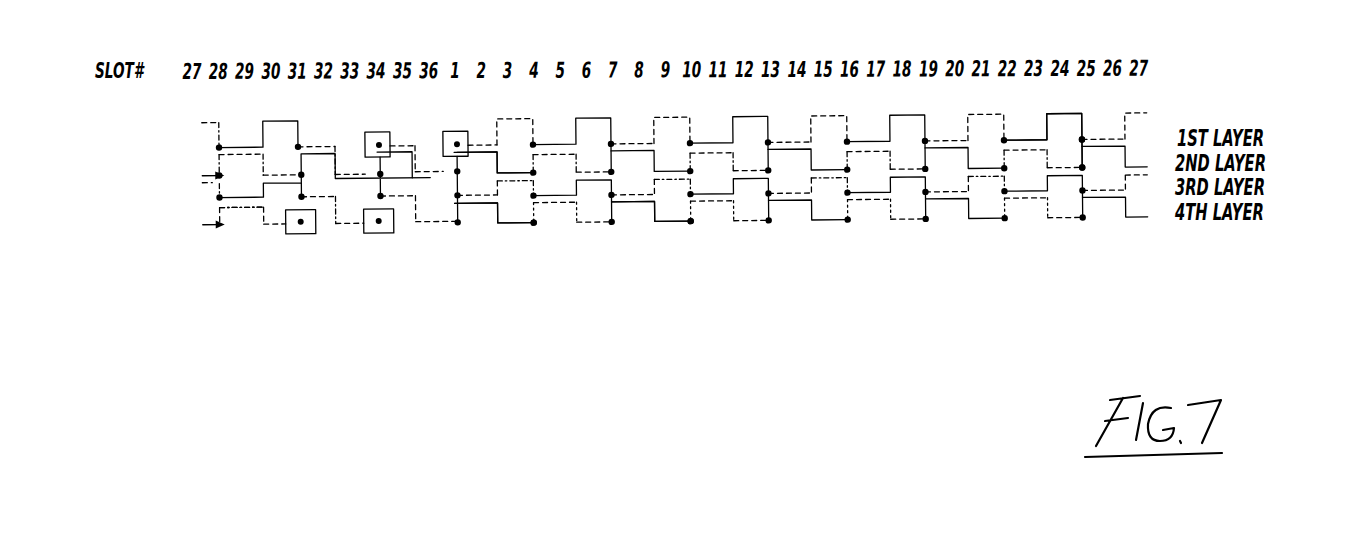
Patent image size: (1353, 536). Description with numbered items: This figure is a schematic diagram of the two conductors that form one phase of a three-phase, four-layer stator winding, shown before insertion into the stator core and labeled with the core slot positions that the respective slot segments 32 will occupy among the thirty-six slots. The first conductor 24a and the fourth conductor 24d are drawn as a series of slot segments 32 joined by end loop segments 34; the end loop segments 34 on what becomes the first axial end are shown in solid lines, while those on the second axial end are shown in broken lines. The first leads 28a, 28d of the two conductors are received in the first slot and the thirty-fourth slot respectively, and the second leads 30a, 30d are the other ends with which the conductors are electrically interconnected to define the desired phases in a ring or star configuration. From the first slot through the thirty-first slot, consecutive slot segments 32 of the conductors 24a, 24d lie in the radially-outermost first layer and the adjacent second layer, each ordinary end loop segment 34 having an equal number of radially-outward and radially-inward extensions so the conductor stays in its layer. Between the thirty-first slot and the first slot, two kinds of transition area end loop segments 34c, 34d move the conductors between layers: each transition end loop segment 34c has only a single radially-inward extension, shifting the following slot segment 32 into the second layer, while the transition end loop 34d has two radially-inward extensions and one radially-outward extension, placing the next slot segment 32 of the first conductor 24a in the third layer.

The first conductor 24a is at (1067, 113).
The fourth conductor 24d is at (1127, 152).
The first lead of the first conductor 28a is at (461, 133).
The first lead of the fourth conductor 28d is at (380, 133).
The second lead of the first conductor 30a is at (393, 229).
The second lead of the fourth conductor 30d is at (313, 233).
The slot segment 32 is at (535, 223).
The end loop segment 34 is at (662, 225).
The transition area end loop segment 34c is at (322, 146).
The transition area end loop segment 34d is at (430, 179).